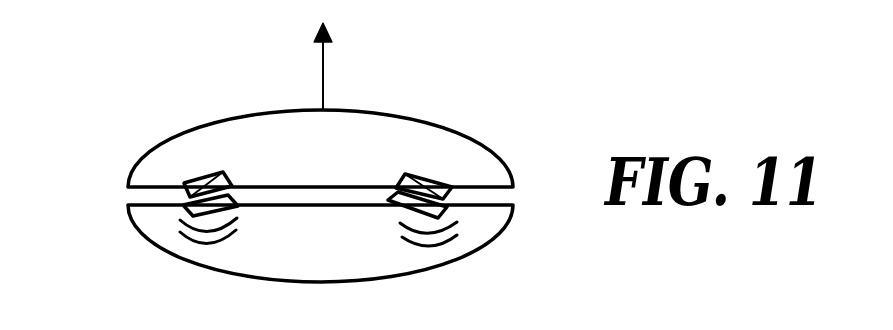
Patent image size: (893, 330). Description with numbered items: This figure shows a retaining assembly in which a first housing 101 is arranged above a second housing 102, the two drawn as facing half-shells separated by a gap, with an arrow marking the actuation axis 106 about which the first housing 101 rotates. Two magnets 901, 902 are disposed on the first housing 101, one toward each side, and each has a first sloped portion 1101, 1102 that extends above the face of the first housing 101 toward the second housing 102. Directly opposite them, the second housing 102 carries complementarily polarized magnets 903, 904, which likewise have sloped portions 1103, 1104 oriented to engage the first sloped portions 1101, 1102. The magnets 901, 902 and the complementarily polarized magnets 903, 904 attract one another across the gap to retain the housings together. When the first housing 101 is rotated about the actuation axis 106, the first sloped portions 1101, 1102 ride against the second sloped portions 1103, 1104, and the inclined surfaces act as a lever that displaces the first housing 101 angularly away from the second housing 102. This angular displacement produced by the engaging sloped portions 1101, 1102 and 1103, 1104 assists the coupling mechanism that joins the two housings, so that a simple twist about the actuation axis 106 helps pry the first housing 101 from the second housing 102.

The first housing 101 is at (422, 142).
The second housing 102 is at (348, 258).
The actuation axis 106 is at (323, 86).
The magnet 901 is at (210, 174).
The magnet 902 is at (427, 183).
The complimentarily polarized magnet 903 is at (203, 220).
The complimentarily polarized magnet 904 is at (435, 230).
The first sloped portion 1101 is at (203, 190).
The first sloped portion 1102 is at (423, 185).
The second sloped portion 1103 is at (236, 226).
The second sloped portion 1104 is at (452, 222).